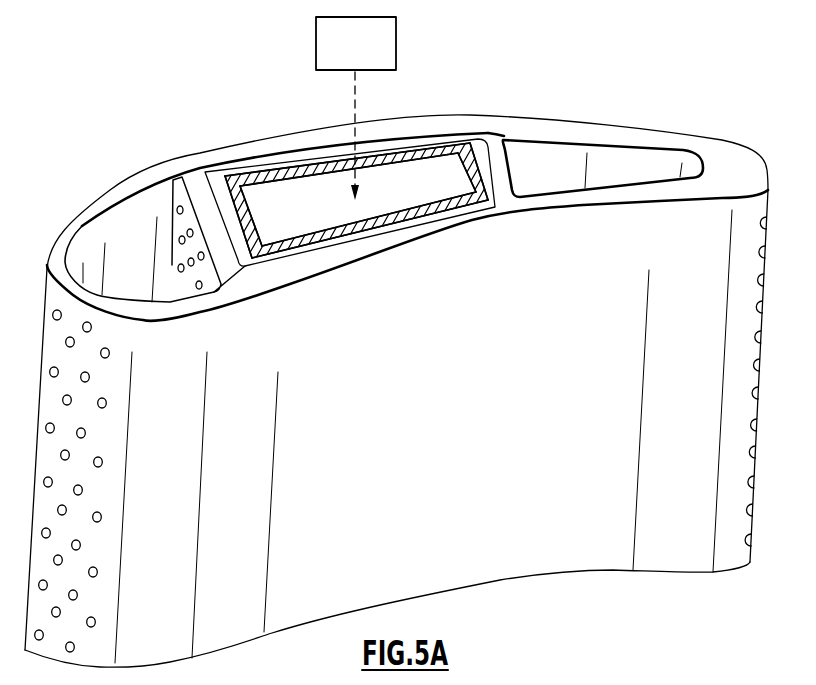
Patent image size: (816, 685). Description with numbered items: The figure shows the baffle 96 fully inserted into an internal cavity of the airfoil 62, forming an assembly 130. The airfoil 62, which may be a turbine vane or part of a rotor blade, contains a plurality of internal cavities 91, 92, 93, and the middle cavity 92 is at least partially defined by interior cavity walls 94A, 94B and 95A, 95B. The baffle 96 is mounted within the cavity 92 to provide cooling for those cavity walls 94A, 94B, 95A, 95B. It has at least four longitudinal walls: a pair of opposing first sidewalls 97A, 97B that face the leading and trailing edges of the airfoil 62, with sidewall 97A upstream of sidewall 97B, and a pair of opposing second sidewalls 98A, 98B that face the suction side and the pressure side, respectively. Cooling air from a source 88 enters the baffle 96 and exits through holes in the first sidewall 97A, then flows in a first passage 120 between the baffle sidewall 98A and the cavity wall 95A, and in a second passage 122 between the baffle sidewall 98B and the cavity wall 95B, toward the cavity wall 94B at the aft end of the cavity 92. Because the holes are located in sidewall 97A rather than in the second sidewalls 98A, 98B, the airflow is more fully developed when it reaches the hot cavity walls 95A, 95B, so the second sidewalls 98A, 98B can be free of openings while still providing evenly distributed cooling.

The assembly 130 is at (155, 100).
The airfoil 62 is at (457, 568).
The source of cooling air 88 is at (368, 60).
The internal cavity 91 is at (117, 226).
The internal cavity 92 is at (224, 165).
The internal cavity 93 is at (613, 156).
The interior cavity wall 94A is at (215, 240).
The interior cavity wall 94B is at (500, 173).
The interior cavity wall 95A is at (274, 138).
The interior cavity wall 95B is at (390, 243).
The baffle 96 is at (425, 137).
The first sidewall 97A is at (260, 190).
The first sidewall 97B is at (458, 175).
The second sidewall 98A is at (298, 174).
The second sidewall 98B is at (333, 227).
The first passage 120 is at (328, 152).
The second passage 122 is at (340, 243).